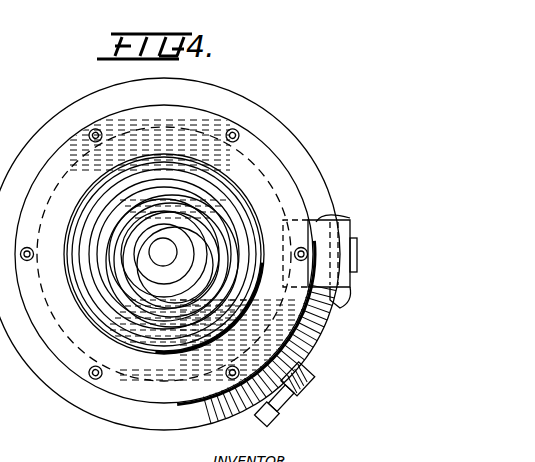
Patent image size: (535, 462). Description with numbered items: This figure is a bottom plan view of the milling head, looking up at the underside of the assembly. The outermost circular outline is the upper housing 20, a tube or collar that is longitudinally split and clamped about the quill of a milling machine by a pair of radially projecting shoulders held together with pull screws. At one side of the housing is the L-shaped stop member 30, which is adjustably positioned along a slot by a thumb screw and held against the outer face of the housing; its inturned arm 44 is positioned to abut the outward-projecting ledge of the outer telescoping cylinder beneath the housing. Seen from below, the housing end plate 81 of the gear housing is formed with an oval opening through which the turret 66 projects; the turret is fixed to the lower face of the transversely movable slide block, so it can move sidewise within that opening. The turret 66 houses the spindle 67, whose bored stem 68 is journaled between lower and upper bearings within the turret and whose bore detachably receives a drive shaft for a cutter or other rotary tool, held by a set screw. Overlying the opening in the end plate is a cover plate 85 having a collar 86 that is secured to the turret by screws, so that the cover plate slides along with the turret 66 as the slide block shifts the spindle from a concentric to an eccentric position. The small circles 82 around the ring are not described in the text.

The upper housing 20 is at (287, 136).
The L-shaped stop member 30 is at (341, 304).
The inturned arm 44 is at (319, 222).
The turret 66 is at (204, 219).
The spindle 67 is at (128, 227).
The bored stem 68 is at (164, 254).
The housing end plate 81 is at (171, 113).
The screws 82 is at (92, 125).
The cover plate 85 is at (203, 166).
The collar 86 is at (122, 207).